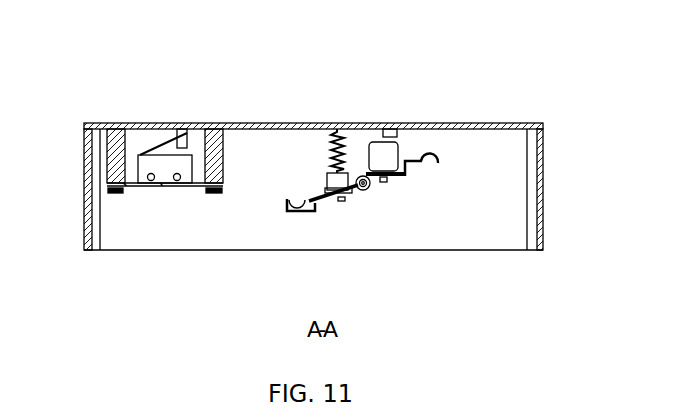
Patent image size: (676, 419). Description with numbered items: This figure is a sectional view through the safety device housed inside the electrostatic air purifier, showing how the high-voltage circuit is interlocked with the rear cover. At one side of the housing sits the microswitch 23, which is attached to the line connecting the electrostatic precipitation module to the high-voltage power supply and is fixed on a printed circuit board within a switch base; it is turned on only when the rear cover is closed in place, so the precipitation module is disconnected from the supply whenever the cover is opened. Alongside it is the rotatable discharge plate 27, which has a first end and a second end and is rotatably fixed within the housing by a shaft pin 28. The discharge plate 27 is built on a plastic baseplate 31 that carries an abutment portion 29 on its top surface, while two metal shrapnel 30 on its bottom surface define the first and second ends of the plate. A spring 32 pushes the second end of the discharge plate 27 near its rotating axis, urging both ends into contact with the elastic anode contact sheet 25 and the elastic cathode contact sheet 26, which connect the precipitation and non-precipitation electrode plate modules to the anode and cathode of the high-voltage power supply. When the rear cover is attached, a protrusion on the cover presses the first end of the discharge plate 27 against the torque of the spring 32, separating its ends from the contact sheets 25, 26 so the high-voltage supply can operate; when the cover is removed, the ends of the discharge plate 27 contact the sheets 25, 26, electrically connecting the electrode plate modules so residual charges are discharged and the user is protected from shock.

The microswitch 23 is at (155, 160).
The elastic anode contact sheet 25 is at (406, 157).
The elastic cathode contact sheet 26 is at (283, 203).
The discharge plate 27 is at (368, 192).
The shaft pin 28 is at (357, 190).
The abutment portion 29 is at (395, 157).
The metal shrapnel 30 is at (333, 193).
The plastic baseplate 31 is at (390, 174).
The spring 32 is at (346, 150).